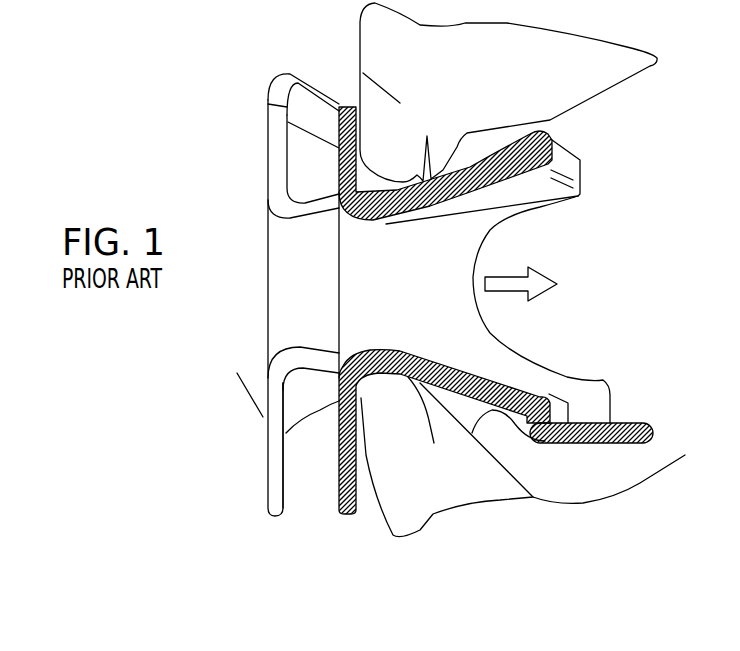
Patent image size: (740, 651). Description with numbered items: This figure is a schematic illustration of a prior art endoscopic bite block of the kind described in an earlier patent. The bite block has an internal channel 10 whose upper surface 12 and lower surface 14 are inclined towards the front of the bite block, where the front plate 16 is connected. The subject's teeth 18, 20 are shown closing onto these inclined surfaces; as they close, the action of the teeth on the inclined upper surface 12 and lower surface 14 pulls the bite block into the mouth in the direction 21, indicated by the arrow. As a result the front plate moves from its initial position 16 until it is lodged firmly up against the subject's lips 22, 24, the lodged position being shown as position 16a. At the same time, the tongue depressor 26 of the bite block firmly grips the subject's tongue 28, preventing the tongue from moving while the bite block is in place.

The internal channel 10 is at (378, 285).
The upper surface 12 is at (440, 216).
The lower surface 14 is at (428, 360).
The front plate 16 is at (267, 463).
The front plate lodged position 16a is at (339, 477).
The tooth 18 is at (437, 165).
The tooth 20 is at (438, 410).
The direction 21 is at (549, 279).
The lip 22 is at (383, 158).
The lip 24 is at (388, 386).
The tongue depressor 26 is at (627, 423).
The tongue 28 is at (570, 487).